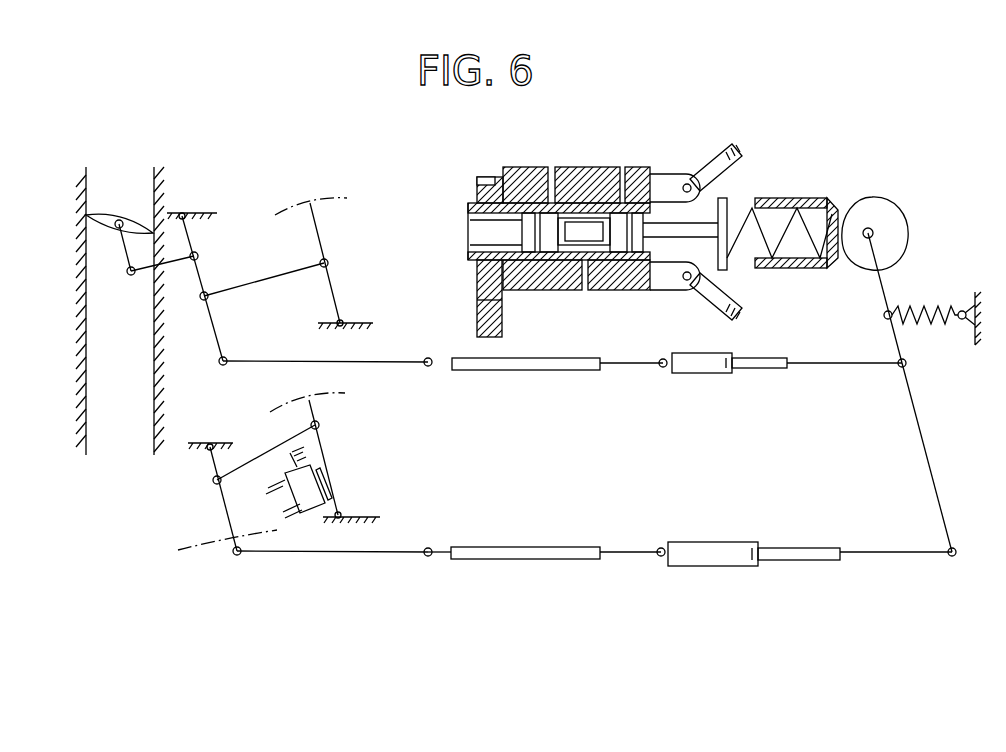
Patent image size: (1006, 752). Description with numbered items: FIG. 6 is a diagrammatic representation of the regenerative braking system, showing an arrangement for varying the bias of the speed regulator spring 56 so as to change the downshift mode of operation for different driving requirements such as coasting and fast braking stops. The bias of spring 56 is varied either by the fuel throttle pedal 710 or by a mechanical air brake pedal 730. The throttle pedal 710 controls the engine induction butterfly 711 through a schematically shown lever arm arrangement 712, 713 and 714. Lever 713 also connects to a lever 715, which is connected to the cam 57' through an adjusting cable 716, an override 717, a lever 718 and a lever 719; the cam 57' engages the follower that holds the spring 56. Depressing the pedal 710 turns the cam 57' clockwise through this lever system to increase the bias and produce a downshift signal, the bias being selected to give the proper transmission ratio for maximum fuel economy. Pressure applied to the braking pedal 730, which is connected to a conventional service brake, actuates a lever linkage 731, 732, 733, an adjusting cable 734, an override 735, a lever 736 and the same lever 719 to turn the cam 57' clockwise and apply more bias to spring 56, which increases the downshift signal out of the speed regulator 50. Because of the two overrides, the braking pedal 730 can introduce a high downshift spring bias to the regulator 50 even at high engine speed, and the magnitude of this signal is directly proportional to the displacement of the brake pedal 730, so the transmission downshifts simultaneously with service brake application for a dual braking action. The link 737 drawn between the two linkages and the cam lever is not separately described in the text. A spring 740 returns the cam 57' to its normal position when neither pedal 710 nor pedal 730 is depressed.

The speed regulator 50 is at (590, 162).
The speed regulator spring 56 is at (790, 200).
The cam 57' is at (898, 233).
The fuel throttle pedal 710 is at (322, 244).
The engine induction butterfly 711 is at (111, 208).
The lever arm 712 is at (260, 282).
The lever 713 is at (199, 272).
The lever arm 714 is at (142, 273).
The lever 715 is at (370, 365).
The adjusting cable 716 is at (545, 372).
The override 717 is at (700, 375).
The lever 718 is at (822, 367).
The lever 719 is at (892, 334).
The mechanical air brake pedal 730 is at (323, 450).
The lever linkage 731 is at (272, 448).
The lever linkage 732 is at (220, 501).
The lever linkage 733 is at (300, 553).
The adjusting cable 734 is at (524, 560).
The override 735 is at (722, 567).
The lever 736 is at (872, 556).
The link 737 is at (917, 458).
The spring 740 is at (920, 326).